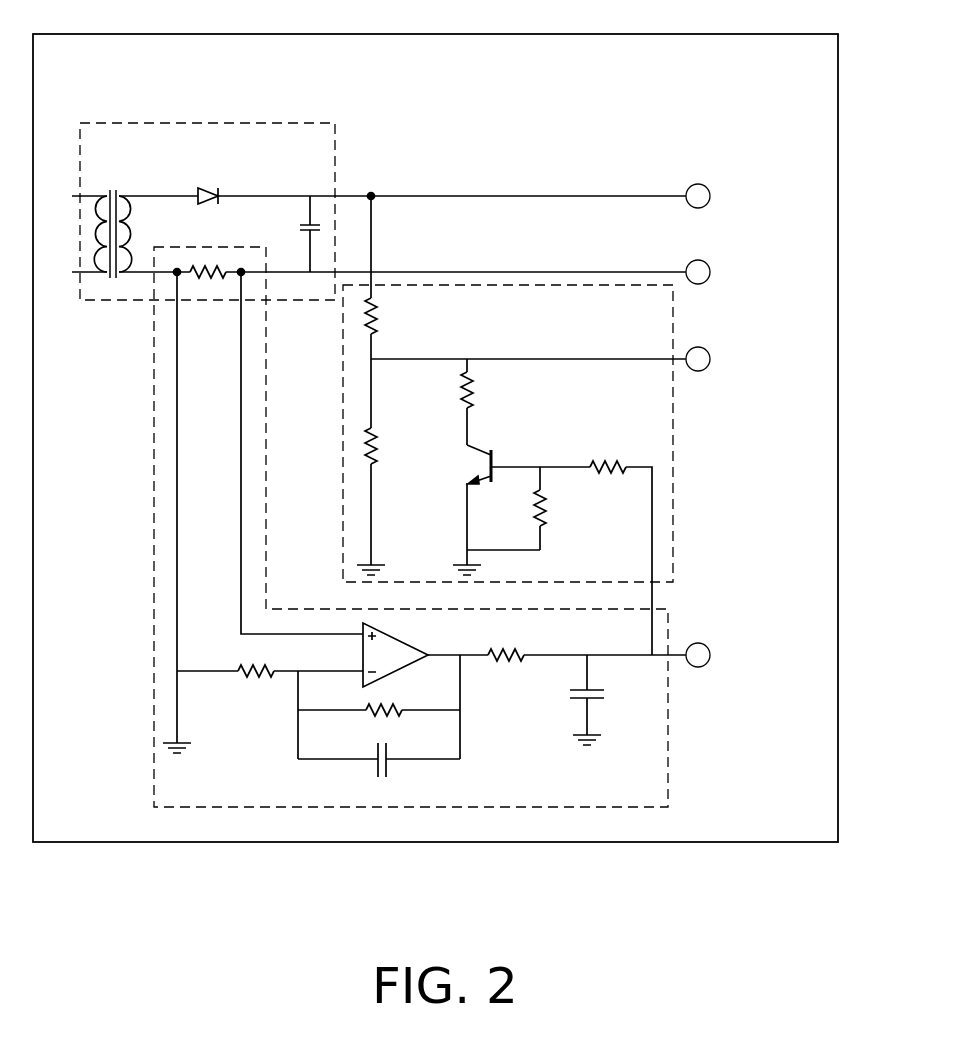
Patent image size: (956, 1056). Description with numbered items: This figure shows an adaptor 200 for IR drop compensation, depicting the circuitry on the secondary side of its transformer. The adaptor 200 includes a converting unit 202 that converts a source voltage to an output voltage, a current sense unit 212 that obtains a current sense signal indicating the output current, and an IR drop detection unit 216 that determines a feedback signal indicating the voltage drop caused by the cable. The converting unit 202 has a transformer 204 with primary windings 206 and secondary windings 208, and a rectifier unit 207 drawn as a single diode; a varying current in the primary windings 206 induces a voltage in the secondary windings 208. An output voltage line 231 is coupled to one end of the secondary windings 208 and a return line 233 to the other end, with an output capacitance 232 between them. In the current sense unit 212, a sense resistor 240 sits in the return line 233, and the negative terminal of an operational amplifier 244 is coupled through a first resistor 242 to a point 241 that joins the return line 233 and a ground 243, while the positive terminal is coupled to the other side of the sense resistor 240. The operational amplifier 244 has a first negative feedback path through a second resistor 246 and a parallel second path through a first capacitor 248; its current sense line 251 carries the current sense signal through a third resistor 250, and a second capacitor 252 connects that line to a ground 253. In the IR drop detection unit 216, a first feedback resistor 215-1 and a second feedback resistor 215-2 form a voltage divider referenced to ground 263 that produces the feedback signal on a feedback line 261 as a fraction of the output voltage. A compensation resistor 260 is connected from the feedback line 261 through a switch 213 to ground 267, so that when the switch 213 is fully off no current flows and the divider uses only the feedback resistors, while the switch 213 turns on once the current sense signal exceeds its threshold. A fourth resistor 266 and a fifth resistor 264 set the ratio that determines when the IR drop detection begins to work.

The adaptor 200 is at (440, 438).
The converting unit 202 is at (337, 168).
The transformer 204 is at (107, 277).
The primary windings 206 is at (85, 252).
The rectifier unit 207 is at (216, 190).
The secondary windings 208 is at (140, 215).
The current sense unit 212 is at (152, 470).
The switch 213 is at (495, 456).
The first feedback resistor 215-1 is at (375, 332).
The second feedback resistor 215-2 is at (371, 430).
The IR drop detection unit 216 is at (676, 440).
The output voltage line 231 is at (583, 196).
The output capacitance 232 is at (318, 220).
The return line 233 is at (565, 272).
The sense resistor 240 is at (228, 280).
The point 241 is at (175, 671).
The first resistor 242 is at (245, 685).
The ground 243 is at (170, 747).
The operational amplifier 244 is at (395, 650).
The second resistor 246 is at (405, 704).
The first capacitor 248 is at (390, 772).
The third resistor 250 is at (525, 645).
The current sense line 251 is at (640, 657).
The second capacitor 252 is at (567, 697).
The ground 253 is at (588, 742).
The compensation resistor 260 is at (480, 390).
The feedback line 261 is at (595, 359).
The ground 263 is at (375, 568).
The fifth resistor 264 is at (545, 515).
The fourth resistor 266 is at (620, 472).
The ground 267 is at (478, 569).